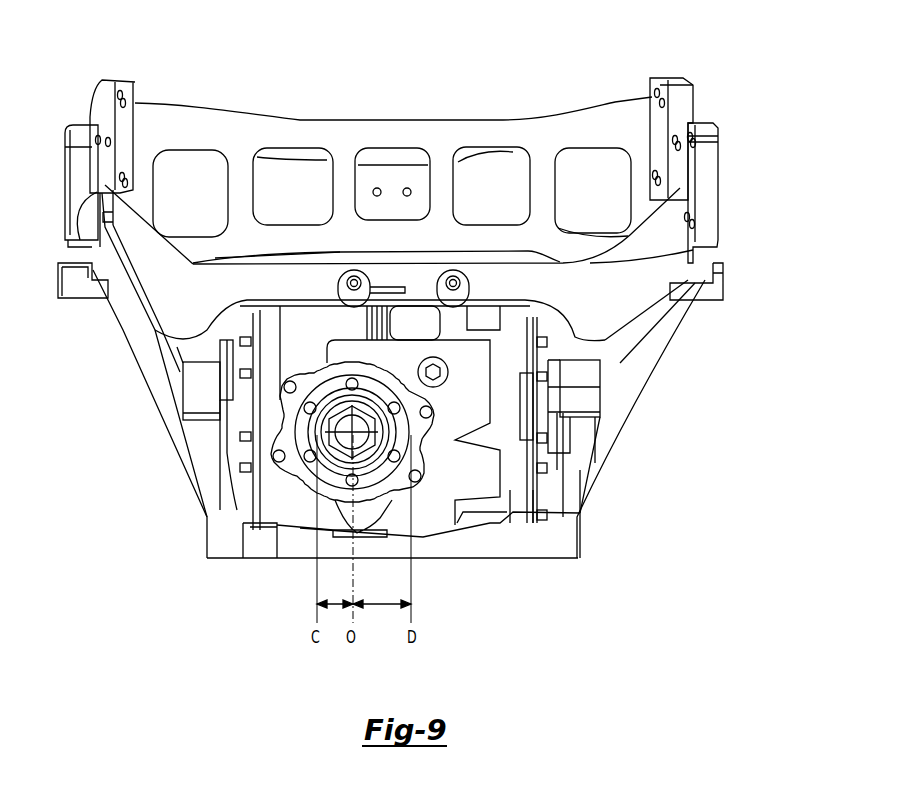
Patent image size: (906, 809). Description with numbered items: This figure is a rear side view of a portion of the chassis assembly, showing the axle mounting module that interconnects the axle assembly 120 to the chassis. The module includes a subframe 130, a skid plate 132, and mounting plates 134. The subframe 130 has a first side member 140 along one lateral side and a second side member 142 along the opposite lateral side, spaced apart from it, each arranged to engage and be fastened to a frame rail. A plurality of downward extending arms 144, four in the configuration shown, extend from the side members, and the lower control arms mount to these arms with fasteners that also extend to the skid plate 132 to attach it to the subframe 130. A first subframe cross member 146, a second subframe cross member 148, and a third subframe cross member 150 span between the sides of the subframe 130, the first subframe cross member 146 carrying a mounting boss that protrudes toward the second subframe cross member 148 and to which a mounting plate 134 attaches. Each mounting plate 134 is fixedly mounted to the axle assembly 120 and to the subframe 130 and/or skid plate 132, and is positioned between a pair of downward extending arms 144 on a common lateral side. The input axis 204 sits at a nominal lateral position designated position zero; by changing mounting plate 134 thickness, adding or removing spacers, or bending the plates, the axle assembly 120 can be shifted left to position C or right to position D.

The axle assembly 120 is at (512, 515).
The subframe 130 is at (675, 75).
The skid plate 132 is at (455, 560).
The mounting plate 134 is at (245, 488).
The first side member 140 is at (718, 168).
The second side member 142 is at (68, 202).
The downward extending arms 144 is at (150, 391).
The first subframe cross member 146 is at (292, 263).
The second subframe cross member 148 is at (390, 120).
The third subframe cross member 150 is at (294, 160).
The input axis 204 is at (392, 396).